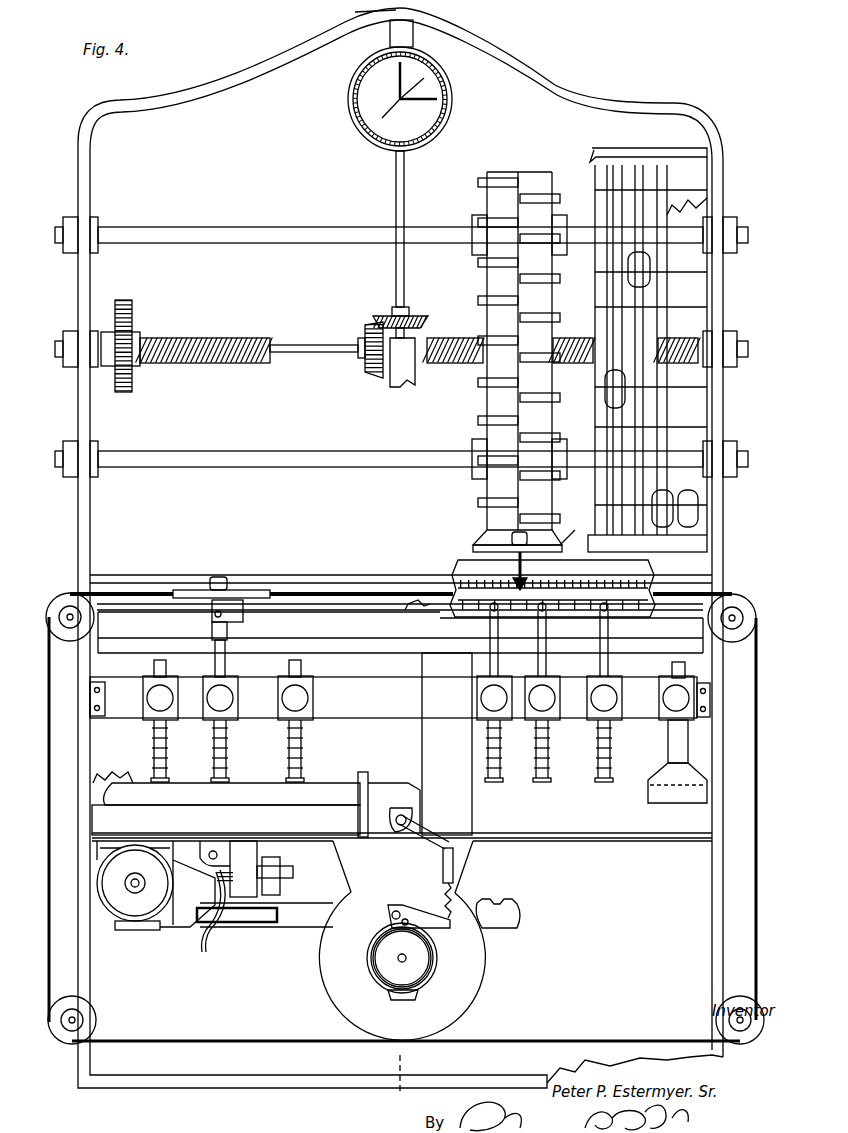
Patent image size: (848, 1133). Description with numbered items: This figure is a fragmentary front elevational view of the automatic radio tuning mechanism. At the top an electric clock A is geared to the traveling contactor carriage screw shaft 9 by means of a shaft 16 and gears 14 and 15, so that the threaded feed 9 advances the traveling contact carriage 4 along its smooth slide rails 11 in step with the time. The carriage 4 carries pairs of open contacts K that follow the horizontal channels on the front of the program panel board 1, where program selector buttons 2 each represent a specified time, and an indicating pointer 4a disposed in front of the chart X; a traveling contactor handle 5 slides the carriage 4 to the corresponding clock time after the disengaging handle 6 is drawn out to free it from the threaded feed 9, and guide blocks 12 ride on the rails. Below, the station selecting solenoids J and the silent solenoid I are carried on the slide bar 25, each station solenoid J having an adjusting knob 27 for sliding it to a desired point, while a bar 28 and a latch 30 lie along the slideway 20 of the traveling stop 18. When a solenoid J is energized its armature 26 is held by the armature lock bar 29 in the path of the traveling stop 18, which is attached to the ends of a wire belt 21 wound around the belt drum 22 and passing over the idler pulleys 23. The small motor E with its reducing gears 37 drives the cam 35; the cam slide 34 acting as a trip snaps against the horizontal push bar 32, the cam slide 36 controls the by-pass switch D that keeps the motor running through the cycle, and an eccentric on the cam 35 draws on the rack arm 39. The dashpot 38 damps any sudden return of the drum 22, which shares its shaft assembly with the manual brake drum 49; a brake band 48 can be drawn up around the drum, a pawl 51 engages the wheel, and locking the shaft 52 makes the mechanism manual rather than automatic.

The program panel board 1 is at (628, 152).
The program selector buttons 2 is at (642, 268).
The traveling contact carriage 4 is at (503, 330).
The indicating pointer 4a is at (512, 556).
The traveling contactor handle 5 is at (462, 563).
The disengaging handle 6 is at (492, 535).
The traveling contactor carriage screw shaft 9 is at (226, 340).
The slide rails 11 is at (292, 243).
The guide blocks 12 is at (558, 222).
The gear 14 is at (134, 312).
The gear 15 is at (370, 325).
The shaft 16 is at (396, 180).
The traveling stop 18 is at (248, 607).
The slideway 20 is at (258, 575).
The wire belt 21 is at (338, 588).
The belt drum 22 is at (462, 1003).
The idler pulley 23 is at (60, 603).
The slide bar 25 is at (350, 692).
The solenoid armature 26 is at (672, 668).
The adjusting knob 27 is at (222, 707).
The bar 28 is at (600, 628).
The armature lock bar 29 is at (138, 618).
The latch 30 is at (405, 607).
The horizontal push bar 32 is at (246, 792).
The cam slide 34 is at (205, 820).
The cam 35 is at (170, 925).
The cam slide 36 is at (210, 950).
The reducing gears 37 is at (123, 930).
The dashpot 38 is at (250, 922).
The rack arm 39 is at (515, 917).
The brake band 48 is at (378, 980).
The manual brake drum 49 is at (420, 975).
The pawl lever 51 is at (455, 925).
The shaft 52 is at (408, 960).
The electric clock A is at (452, 119).
The by-pass switch D is at (283, 864).
The motor E is at (112, 880).
The silent solenoid I is at (660, 722).
The station selecting solenoids J is at (173, 722).
The open contacts K is at (478, 204).
The chart X is at (455, 576).